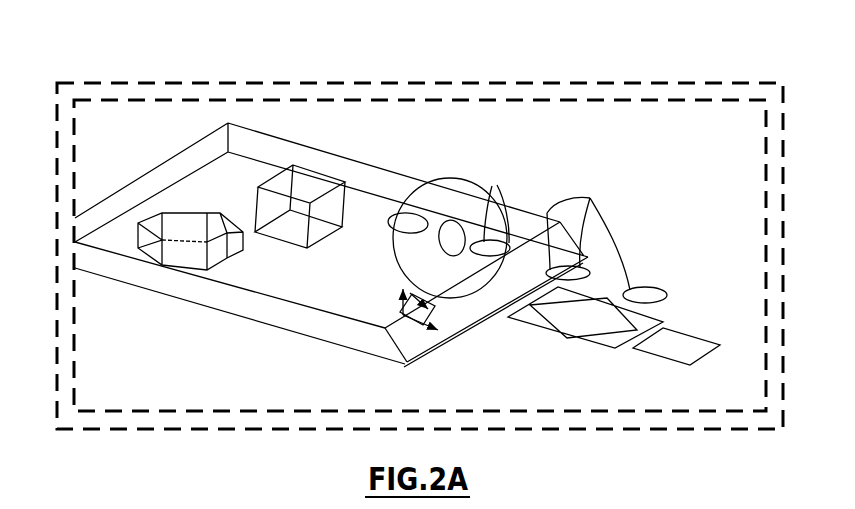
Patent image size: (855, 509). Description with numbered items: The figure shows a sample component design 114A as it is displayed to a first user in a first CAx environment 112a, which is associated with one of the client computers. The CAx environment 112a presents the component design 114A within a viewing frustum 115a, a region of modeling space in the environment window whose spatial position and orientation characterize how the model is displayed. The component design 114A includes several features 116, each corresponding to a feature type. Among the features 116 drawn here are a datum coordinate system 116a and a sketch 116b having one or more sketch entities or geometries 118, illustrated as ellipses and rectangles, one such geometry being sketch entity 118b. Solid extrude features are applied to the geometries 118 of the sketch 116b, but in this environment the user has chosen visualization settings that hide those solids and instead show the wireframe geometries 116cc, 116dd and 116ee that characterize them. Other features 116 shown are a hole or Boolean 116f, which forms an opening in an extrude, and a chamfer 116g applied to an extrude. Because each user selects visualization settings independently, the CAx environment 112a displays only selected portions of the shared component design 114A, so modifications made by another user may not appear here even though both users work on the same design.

The first CAx environment 112a is at (196, 80).
The viewing frustum 115a is at (107, 97).
The component design 114A is at (167, 158).
The hole or Boolean 116f is at (182, 210).
The wireframe 116dd is at (329, 172).
The wireframe 116cc is at (391, 167).
The wireframe geometry 116ee is at (484, 180).
The sketch entity or geometry 118b is at (491, 186).
The features 116 is at (590, 198).
The sketch 116b is at (676, 310).
The sketch entities or geometries 118 is at (478, 331).
The datum coordinate system 116a is at (390, 350).
The chamfer 116g is at (391, 342).